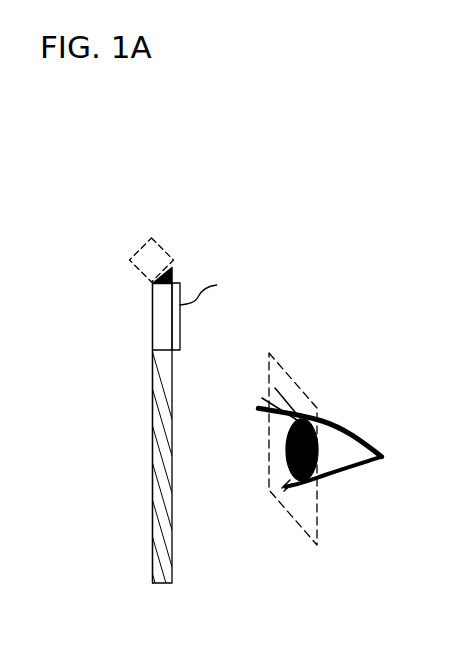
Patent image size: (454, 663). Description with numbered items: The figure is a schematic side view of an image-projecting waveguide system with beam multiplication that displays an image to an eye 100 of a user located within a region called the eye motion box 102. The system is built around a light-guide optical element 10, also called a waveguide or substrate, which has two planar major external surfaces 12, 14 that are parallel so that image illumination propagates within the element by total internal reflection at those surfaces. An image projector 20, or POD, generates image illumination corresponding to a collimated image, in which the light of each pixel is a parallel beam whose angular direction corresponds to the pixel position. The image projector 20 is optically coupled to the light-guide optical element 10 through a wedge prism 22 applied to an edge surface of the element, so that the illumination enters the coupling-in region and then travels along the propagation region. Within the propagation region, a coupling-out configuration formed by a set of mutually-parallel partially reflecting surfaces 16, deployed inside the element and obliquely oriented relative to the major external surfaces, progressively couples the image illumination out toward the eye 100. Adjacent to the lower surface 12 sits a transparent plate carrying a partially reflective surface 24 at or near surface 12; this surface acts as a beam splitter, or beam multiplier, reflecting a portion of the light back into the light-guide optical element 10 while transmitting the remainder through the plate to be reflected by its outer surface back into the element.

The light-guide optical element 10 is at (162, 433).
The lower major external surface 12 is at (172, 398).
The major external surface 14 is at (153, 375).
The partially reflecting surfaces 16 is at (153, 478).
The image projector 20 is at (142, 248).
The wedge prism 22 is at (172, 273).
The partially reflective surface 24 is at (172, 320).
The eye 100 is at (347, 427).
The eye motion box 102 is at (318, 532).